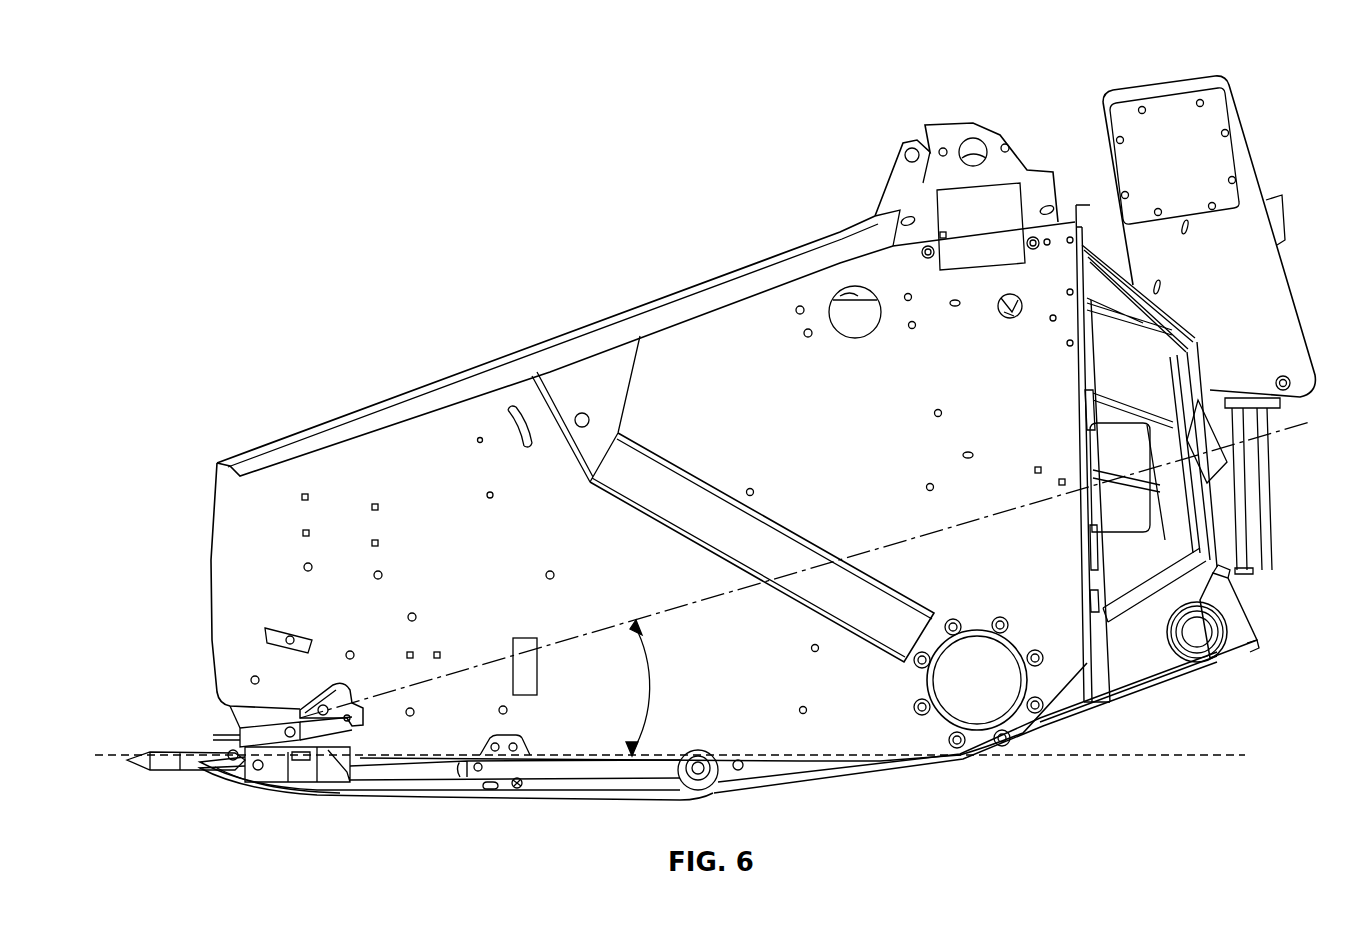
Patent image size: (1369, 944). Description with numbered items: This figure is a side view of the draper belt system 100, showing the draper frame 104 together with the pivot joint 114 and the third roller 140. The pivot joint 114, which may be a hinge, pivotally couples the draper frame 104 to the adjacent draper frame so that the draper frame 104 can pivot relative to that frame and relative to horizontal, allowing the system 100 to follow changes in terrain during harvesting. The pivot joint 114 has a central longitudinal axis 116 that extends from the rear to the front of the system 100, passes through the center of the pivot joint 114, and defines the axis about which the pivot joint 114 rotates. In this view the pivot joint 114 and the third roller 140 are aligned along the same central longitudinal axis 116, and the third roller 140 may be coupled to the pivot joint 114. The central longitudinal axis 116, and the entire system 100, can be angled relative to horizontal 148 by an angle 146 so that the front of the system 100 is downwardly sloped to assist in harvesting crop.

The system 100 is at (322, 78).
The draper frame 104 is at (1133, 297).
The pivot joint 114 is at (1227, 465).
The central longitudinal axis 116 is at (1271, 430).
The third roller 140 is at (1160, 483).
The angle 146 is at (652, 687).
The horizontal 148 is at (1160, 758).